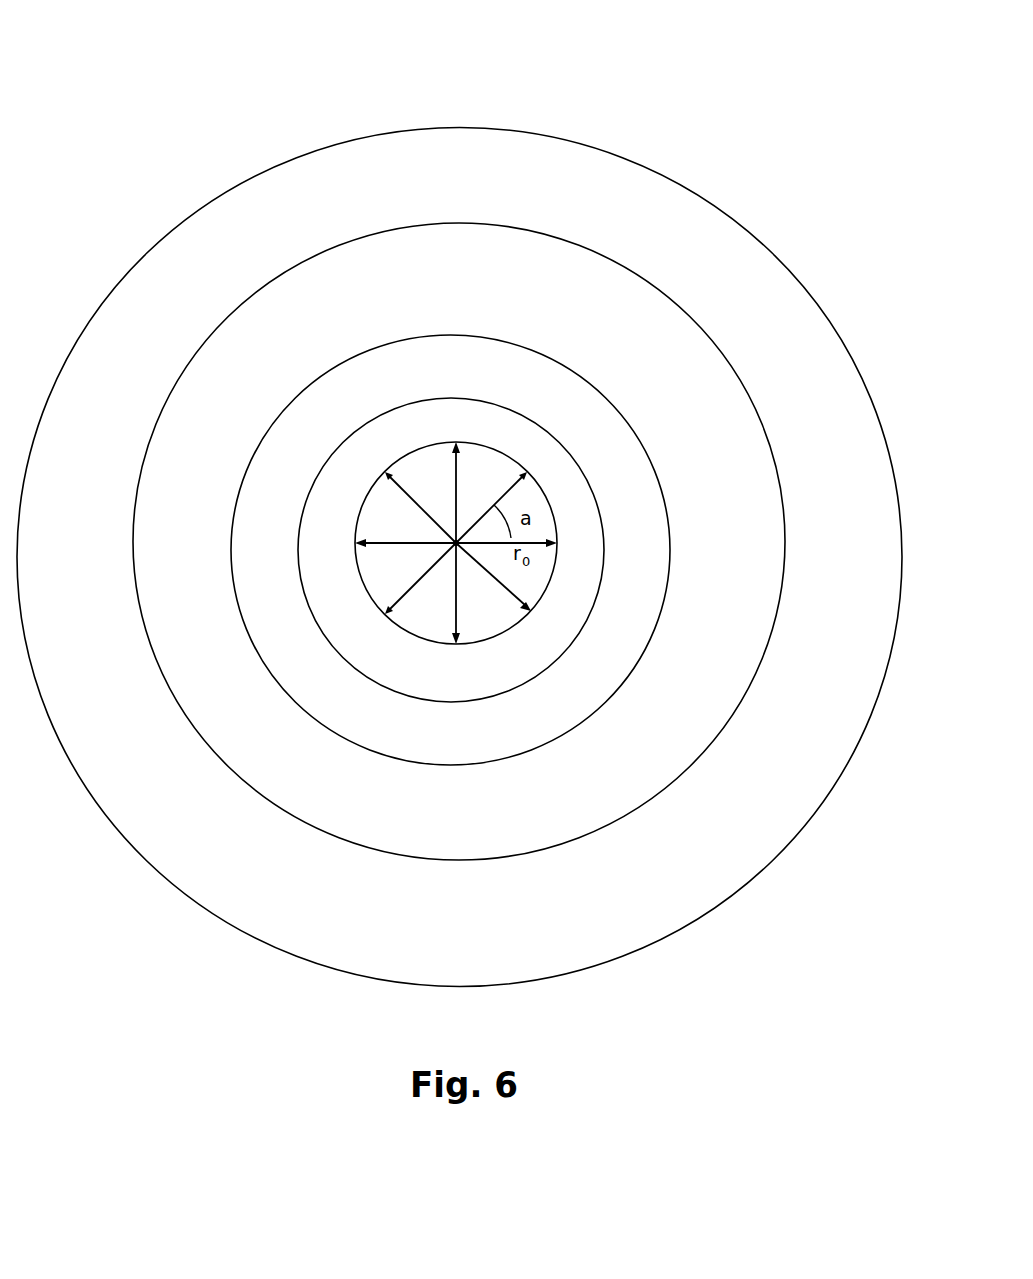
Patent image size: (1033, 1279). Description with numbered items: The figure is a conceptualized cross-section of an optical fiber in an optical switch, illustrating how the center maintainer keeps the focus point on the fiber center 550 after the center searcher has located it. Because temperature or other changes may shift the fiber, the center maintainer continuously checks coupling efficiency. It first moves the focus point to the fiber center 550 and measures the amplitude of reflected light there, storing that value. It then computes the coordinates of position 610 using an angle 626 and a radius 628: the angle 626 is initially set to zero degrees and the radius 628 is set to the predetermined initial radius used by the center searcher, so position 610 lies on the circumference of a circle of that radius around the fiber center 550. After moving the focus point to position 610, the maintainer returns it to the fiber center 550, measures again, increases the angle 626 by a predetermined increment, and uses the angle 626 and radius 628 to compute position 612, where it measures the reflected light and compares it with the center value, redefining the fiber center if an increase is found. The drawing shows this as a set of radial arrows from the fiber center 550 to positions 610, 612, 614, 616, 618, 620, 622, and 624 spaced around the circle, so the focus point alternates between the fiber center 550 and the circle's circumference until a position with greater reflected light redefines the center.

The fiber center 550 is at (459, 547).
The position 610 is at (526, 541).
The position 612 is at (510, 497).
The radial direction vector 614 is at (460, 477).
The radial direction vector 616 is at (400, 497).
The radial direction vector 618 is at (383, 543).
The radial direction vector 620 is at (403, 590).
The radial direction vector 622 is at (452, 607).
The radial direction vector 624 is at (513, 588).
The angle 626 is at (537, 513).
The radius 628 is at (533, 556).